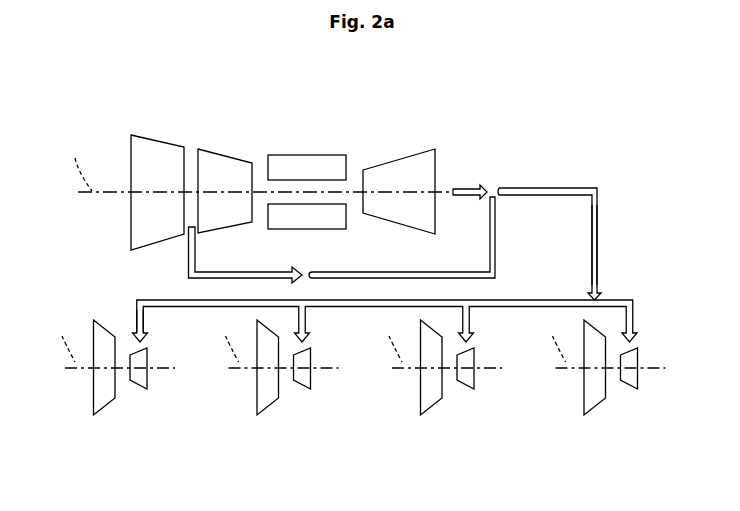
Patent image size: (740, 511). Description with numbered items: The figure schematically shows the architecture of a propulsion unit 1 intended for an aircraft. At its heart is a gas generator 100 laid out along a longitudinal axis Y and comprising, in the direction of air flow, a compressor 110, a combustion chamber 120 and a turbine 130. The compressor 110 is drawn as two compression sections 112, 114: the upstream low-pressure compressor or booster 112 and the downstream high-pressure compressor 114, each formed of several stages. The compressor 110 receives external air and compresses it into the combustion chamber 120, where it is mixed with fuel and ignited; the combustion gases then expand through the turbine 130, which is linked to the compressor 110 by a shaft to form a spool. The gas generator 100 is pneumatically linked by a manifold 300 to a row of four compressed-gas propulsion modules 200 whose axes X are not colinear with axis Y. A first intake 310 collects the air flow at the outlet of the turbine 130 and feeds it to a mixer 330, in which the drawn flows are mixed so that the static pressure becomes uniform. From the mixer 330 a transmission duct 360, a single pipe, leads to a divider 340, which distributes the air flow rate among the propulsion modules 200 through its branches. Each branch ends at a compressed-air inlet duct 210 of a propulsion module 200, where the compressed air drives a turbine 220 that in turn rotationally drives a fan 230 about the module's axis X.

The propulsion unit 1 is at (37, 140).
The gas generator 100 is at (277, 87).
The compressor 110 is at (253, 128).
The compression section 112 is at (157, 192).
The compression section 114 is at (225, 191).
The combustion chamber 120 is at (268, 128).
The turbine 130 is at (362, 128).
The manifold 300 is at (622, 175).
The first intake 310 is at (458, 187).
The mixer 330 is at (545, 187).
The divider 340 is at (600, 298).
The transmission duct 360 is at (599, 243).
The compressed-gas propulsion module 200 is at (144, 413).
The compressed-air inlet duct 210 is at (148, 341).
The turbine 220 is at (150, 377).
The fan 230 is at (90, 377).